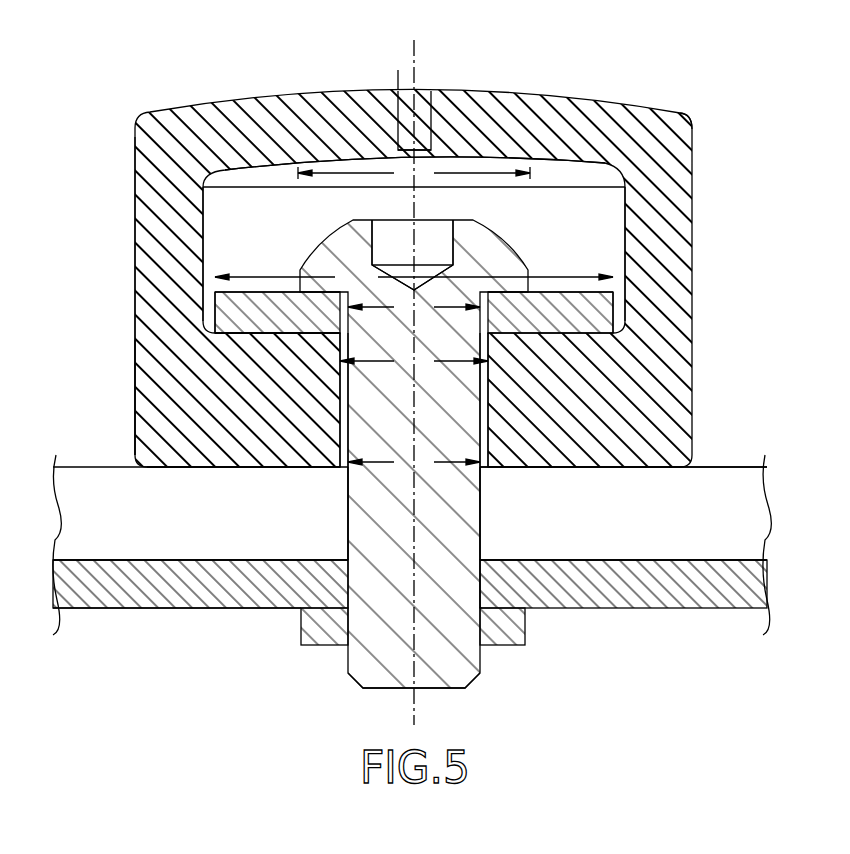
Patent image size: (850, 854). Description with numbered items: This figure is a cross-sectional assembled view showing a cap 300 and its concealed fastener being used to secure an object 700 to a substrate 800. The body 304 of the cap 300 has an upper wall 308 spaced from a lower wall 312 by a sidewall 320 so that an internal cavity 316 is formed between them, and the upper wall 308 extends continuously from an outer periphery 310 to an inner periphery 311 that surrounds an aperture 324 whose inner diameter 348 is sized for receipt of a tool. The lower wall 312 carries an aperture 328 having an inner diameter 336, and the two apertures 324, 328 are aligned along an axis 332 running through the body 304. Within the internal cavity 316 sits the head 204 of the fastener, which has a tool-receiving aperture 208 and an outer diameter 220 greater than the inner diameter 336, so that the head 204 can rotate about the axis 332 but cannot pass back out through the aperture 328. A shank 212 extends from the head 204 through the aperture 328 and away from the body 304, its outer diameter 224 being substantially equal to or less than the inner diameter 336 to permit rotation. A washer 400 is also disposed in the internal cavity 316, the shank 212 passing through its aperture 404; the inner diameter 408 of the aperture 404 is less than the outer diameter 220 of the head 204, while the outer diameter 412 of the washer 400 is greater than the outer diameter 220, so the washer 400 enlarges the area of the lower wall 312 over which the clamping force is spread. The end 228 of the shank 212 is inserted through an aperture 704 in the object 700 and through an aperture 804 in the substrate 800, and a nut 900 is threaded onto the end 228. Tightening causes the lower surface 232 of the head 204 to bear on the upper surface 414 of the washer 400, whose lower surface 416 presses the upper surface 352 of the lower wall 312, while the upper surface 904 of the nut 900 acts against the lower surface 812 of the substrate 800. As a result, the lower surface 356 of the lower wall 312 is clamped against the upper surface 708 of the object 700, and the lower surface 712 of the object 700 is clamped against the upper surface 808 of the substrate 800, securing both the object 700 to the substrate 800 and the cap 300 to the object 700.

The cap 300 is at (133, 118).
The body 304 is at (135, 140).
The upper wall 308 is at (285, 135).
The outer periphery 310 is at (690, 118).
The inner periphery 311 is at (405, 82).
The inner diameter 348 is at (378, 77).
The aperture 324 is at (430, 100).
The sidewall 320 is at (173, 210).
The internal cavity 316 is at (620, 206).
The outer diameter 220 is at (414, 173).
The tool-receiving aperture 208 is at (448, 234).
The head 204 is at (530, 248).
The upper surface 414 is at (283, 290).
The outer diameter 412 is at (414, 277).
The lower surface 232 is at (315, 297).
The washer 400 is at (598, 306).
The inner diameter 408 is at (414, 307).
The aperture 404 is at (490, 352).
The inner diameter 336 is at (414, 361).
The aperture 328 is at (478, 392).
The shank 212 is at (445, 432).
The lower wall 312 is at (245, 422).
The lower surface 416 is at (243, 335).
The upper surface 352 is at (316, 327).
The lower surface 356 is at (180, 470).
The upper surface 708 is at (692, 465).
The object 700 is at (728, 487).
The outer diameter 224 is at (414, 462).
The aperture 704 is at (482, 498).
The lower surface 712 is at (690, 562).
The upper surface 808 is at (215, 560).
The aperture 804 is at (487, 568).
The substrate 800 is at (650, 592).
The lower surface 812 is at (105, 608).
The nut 900 is at (305, 632).
The upper surface 904 is at (520, 600).
The end 228 is at (470, 682).
The axis 332 is at (413, 706).